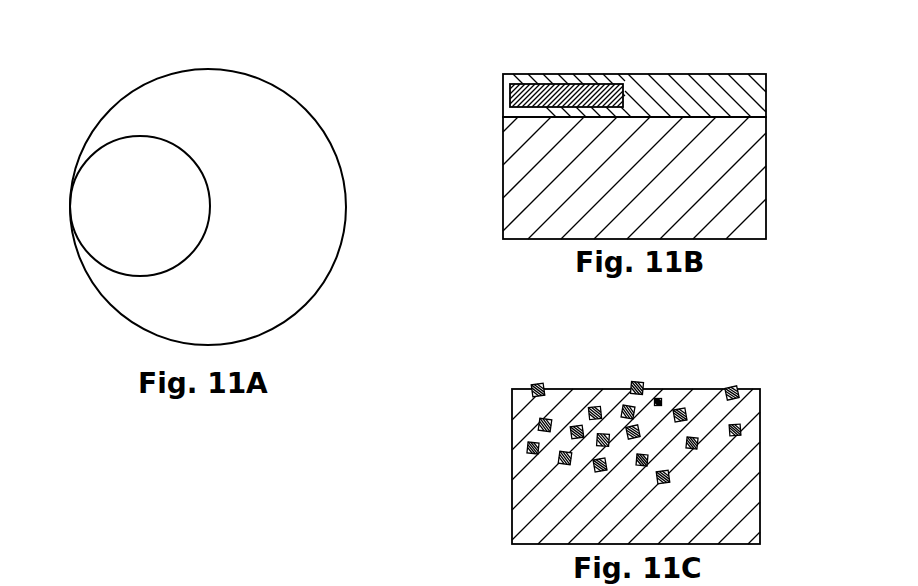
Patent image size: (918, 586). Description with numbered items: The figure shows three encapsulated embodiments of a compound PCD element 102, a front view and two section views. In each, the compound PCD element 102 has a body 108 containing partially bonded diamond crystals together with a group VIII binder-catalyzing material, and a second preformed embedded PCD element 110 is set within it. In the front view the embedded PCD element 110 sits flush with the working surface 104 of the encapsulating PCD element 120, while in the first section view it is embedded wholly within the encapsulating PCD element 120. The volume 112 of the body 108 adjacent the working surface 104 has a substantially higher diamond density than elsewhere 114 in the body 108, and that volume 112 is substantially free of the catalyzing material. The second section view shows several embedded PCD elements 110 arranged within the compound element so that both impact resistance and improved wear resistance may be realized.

In FIG. 11A, the compound PCD element 102 is at (222, 217).
In FIG. 11B, the compound PCD element 102 is at (497, 153).
In FIG. 11C, the compound PCD element 102 is at (684, 466).
In FIG. 11A, the working surface 104 is at (121, 201).
In FIG. 11B, the working surface 104 is at (639, 75).
In FIG. 11C, the working surface 104 is at (625, 401).
In FIG. 11A, the body 108 is at (203, 186).
In FIG. 11B, the body 108 is at (624, 133).
In FIG. 11C, the body 108 is at (642, 431).
In FIG. 11A, the embedded PCD element 110 is at (127, 245).
In FIG. 11B, the embedded PCD element 110 is at (532, 76).
In FIG. 11C, the embedded PCD element 110 is at (634, 401).
In FIG. 11B, the volume adjacent the working surface 112 is at (510, 96).
In FIG. 11C, the volume adjacent the working surface 112 is at (660, 400).
In FIG. 11B, the elsewhere in the body 114 is at (740, 104).
In FIG. 11C, the elsewhere in the body 114 is at (745, 467).
In FIG. 11A, the encapsulating PCD element 120 is at (285, 120).
In FIG. 11B, the encapsulating PCD element 120 is at (731, 78).
In FIG. 11C, the encapsulating PCD element 120 is at (672, 466).